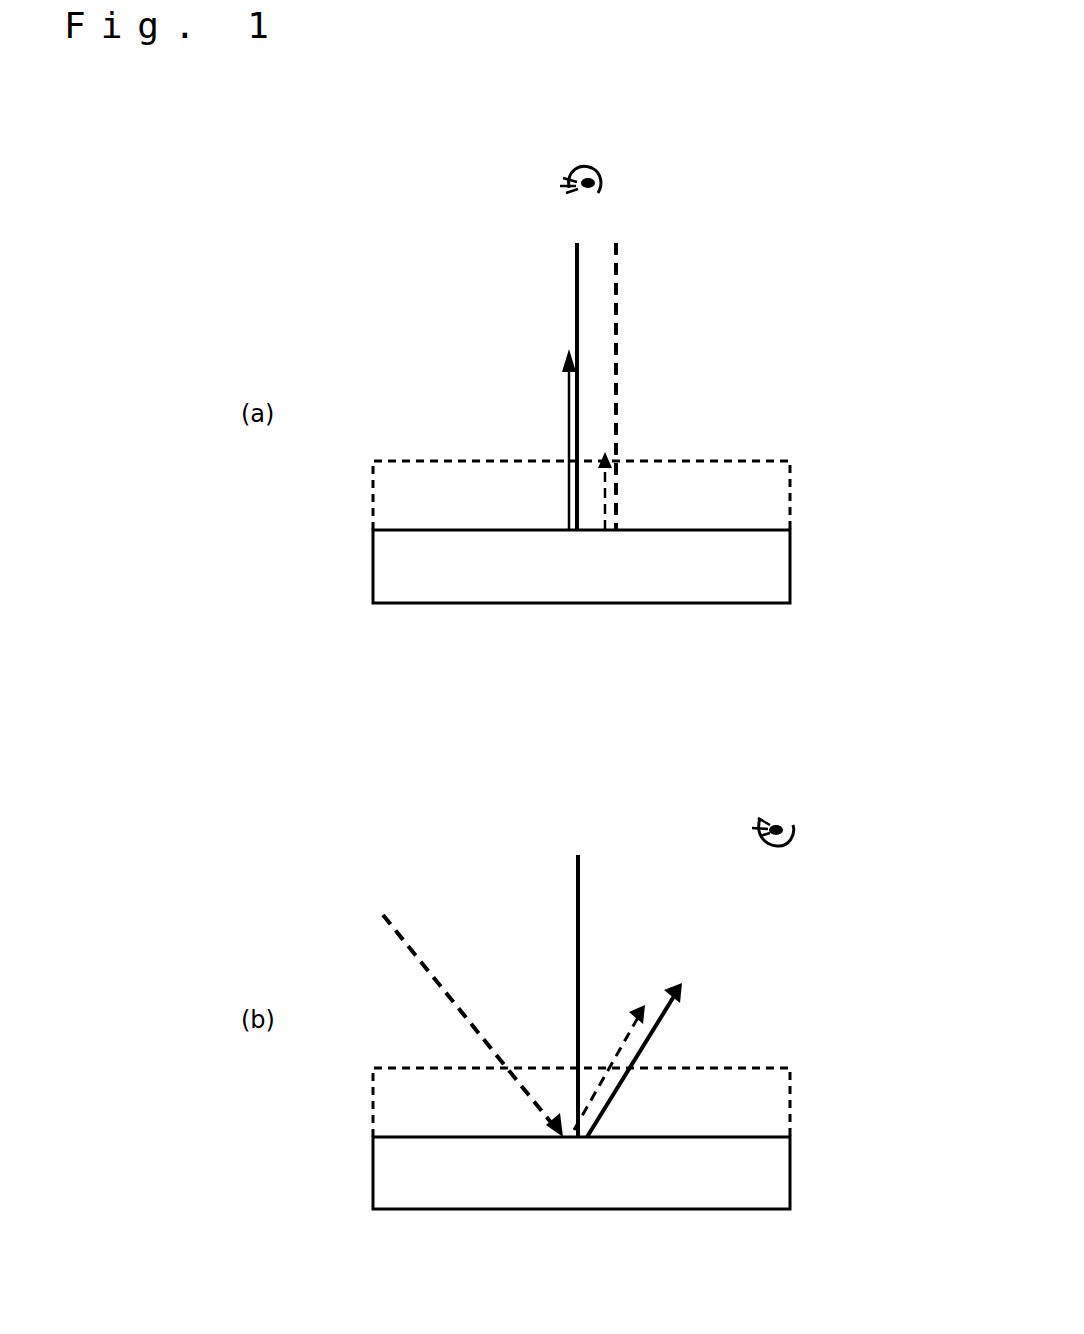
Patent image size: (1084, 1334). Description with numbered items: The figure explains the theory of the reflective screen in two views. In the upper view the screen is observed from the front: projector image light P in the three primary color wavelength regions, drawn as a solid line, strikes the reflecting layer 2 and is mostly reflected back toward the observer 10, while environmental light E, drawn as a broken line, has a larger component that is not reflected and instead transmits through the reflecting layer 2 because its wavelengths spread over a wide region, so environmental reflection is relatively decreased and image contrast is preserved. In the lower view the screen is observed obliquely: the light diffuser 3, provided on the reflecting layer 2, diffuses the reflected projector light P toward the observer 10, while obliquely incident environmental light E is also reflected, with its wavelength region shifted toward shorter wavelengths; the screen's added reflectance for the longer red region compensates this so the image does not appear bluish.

The detector / observation point 10 is at (613, 182).
The reflecting layer 2 is at (790, 562).
The light diffuser 3 is at (792, 1100).
The probe light P is at (572, 297).
The excitation light E is at (618, 325).